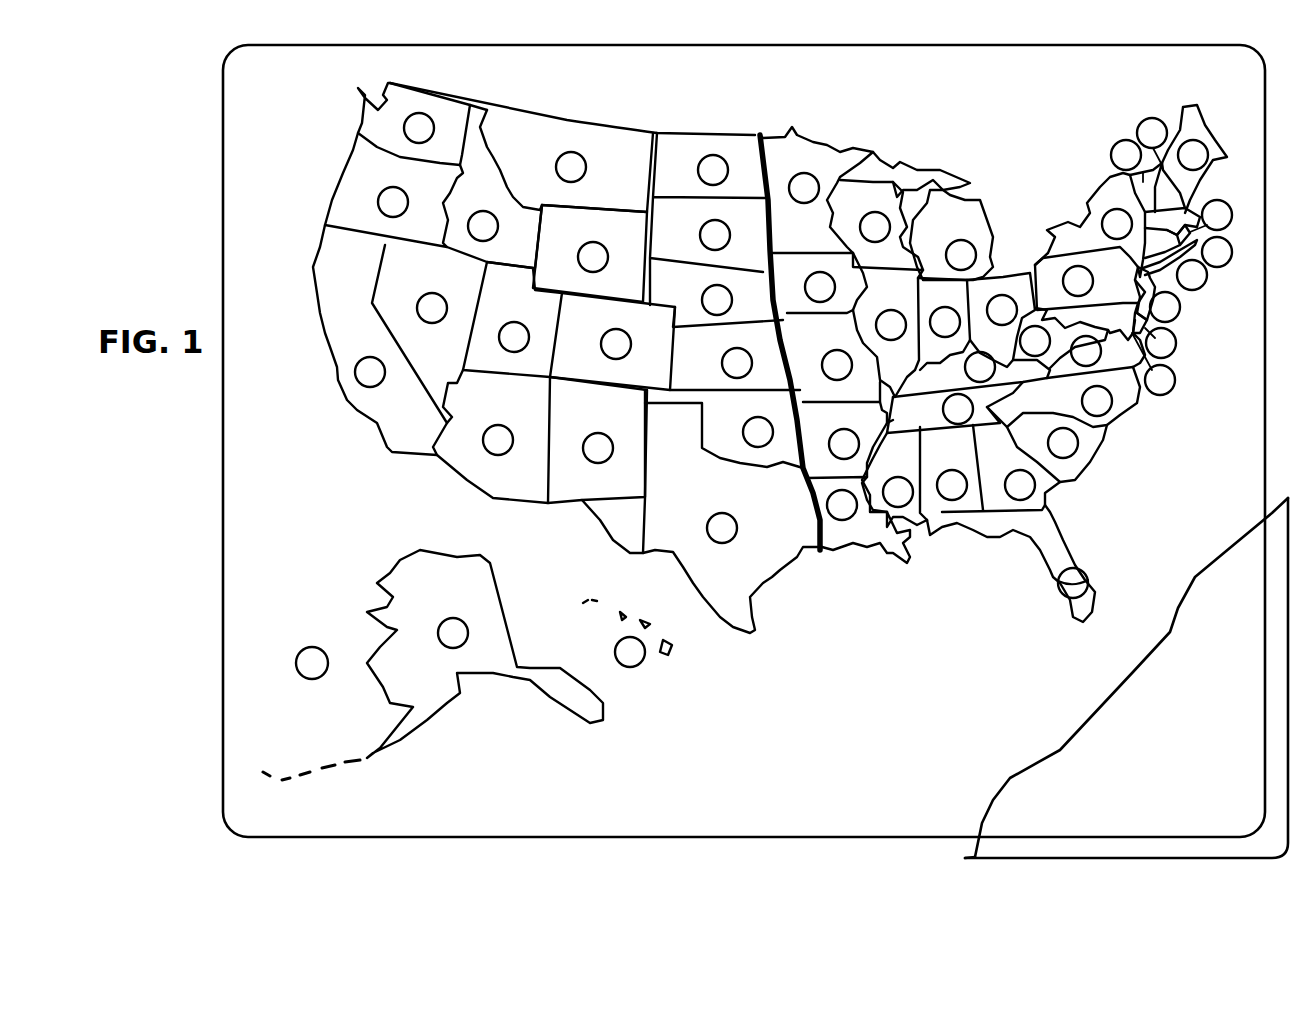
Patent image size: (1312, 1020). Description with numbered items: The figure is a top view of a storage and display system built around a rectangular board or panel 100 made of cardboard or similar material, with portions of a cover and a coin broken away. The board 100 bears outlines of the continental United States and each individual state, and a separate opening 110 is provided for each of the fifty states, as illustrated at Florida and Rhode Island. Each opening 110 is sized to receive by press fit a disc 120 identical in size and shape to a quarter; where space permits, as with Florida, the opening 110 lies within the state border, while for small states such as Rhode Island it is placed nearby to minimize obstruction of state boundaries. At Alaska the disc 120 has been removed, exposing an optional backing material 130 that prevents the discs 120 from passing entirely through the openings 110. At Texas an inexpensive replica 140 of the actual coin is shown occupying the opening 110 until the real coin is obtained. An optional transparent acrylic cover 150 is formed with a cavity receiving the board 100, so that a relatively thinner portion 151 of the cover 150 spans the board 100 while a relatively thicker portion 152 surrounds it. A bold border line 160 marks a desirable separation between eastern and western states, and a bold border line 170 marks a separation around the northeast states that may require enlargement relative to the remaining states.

The board 100 is at (794, 42).
The opening 110 is at (1065, 588).
The disc 120 is at (310, 647).
The backing material 130 is at (466, 628).
The replica 140 is at (733, 517).
The cover 150 is at (965, 855).
The thinner portion 151 is at (1062, 762).
The thicker portion 152 is at (978, 843).
The border line 160 is at (758, 148).
The border line 170 is at (1037, 280).